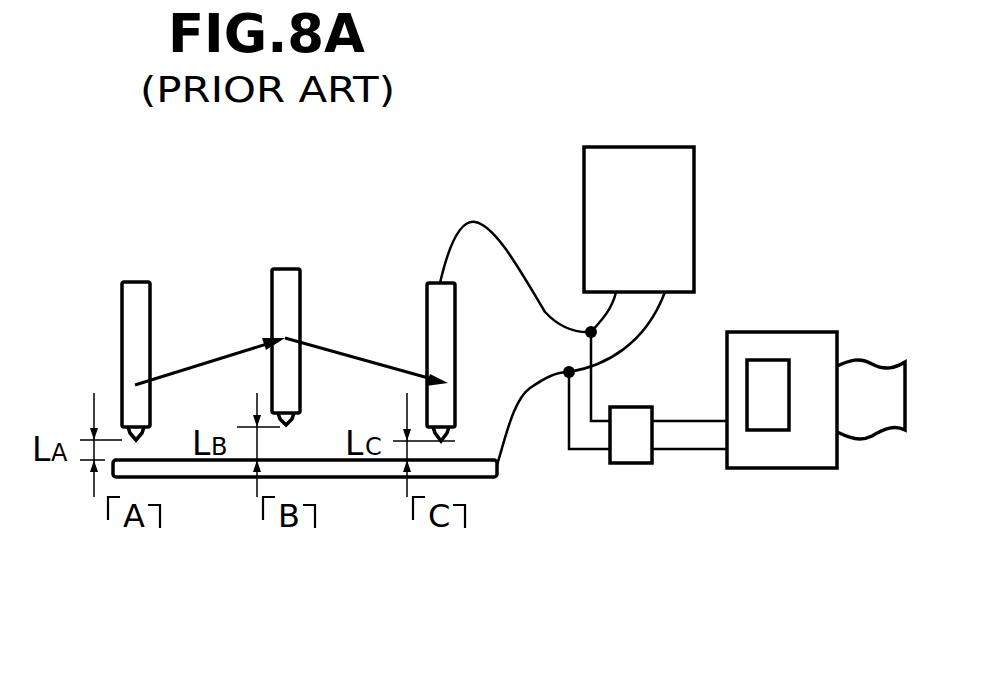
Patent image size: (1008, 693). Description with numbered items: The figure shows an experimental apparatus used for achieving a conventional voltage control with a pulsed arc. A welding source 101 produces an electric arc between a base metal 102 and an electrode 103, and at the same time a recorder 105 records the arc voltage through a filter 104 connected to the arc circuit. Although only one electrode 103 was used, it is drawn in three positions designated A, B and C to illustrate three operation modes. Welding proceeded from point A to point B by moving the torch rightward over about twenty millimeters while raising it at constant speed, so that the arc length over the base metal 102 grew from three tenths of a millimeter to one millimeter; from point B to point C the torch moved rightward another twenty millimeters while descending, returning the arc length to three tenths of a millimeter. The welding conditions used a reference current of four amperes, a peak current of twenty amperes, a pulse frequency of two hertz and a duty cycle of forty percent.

The welding source 101 is at (694, 185).
The base metal 102 is at (363, 477).
The electrode 103 is at (135, 282).
The filter 104 is at (630, 463).
The recorder 105 is at (782, 332).